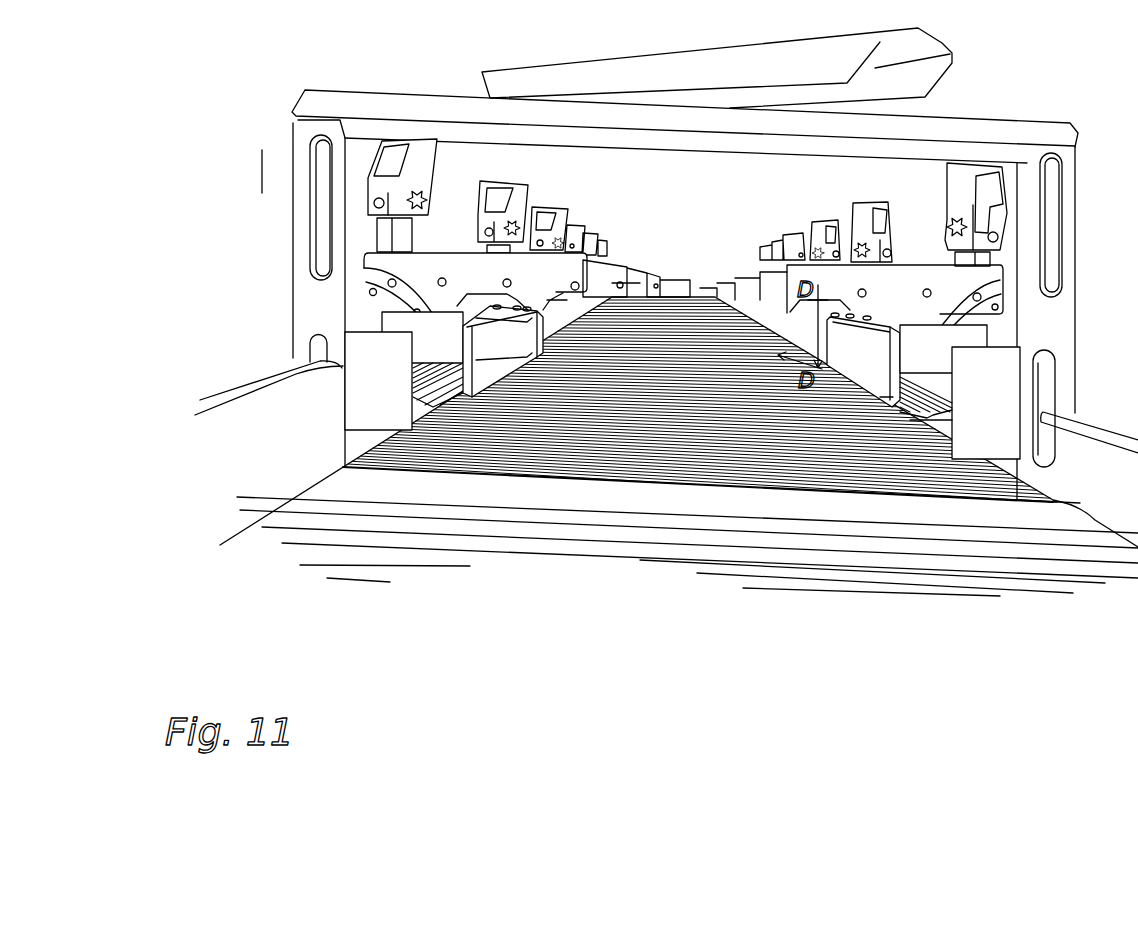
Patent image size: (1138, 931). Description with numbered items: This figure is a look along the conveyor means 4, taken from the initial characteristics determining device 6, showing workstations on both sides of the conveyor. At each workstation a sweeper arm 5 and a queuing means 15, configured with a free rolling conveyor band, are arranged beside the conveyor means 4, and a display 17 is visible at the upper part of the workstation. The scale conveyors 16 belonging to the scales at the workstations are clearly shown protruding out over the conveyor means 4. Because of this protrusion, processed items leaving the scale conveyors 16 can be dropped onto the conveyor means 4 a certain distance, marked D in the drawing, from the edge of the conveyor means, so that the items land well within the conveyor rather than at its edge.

The conveyor means 4 is at (557, 448).
The sweeper arm 5 is at (493, 347).
The initial characteristics determining device 6 is at (350, 547).
The queuing means 15 is at (418, 372).
The scale conveyors 16 is at (433, 263).
The display 17 is at (400, 150).